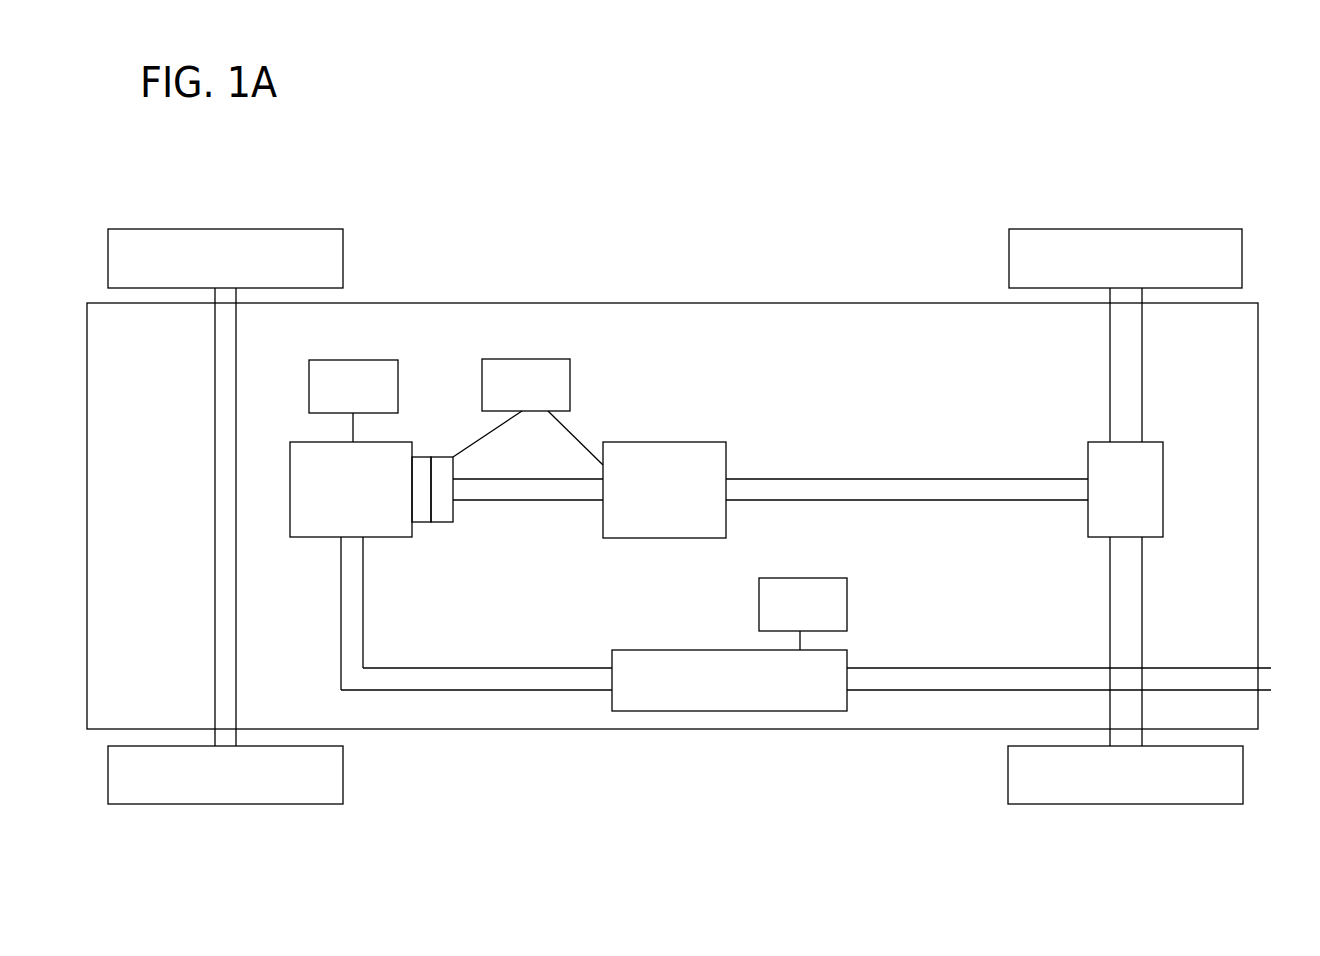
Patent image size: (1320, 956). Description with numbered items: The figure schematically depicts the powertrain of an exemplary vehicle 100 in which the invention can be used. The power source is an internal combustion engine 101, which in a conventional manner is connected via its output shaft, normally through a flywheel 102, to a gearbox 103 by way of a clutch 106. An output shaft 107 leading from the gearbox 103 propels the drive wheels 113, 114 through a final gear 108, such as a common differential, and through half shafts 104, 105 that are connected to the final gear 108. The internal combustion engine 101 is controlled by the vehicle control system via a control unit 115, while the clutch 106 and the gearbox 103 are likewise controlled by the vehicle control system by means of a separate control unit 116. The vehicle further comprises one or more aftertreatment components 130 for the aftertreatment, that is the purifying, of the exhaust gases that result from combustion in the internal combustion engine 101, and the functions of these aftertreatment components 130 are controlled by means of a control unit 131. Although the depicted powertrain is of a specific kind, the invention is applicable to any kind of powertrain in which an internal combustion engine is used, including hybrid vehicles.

The vehicle 100 is at (577, 135).
The internal combustion engine 101 is at (322, 528).
The flywheel 102 is at (428, 523).
The gearbox 103 is at (665, 453).
The half shaft 104 is at (1128, 363).
The half shaft 105 is at (1135, 651).
The clutch 106 is at (443, 515).
The output shaft 107 is at (1003, 494).
The final gear 108 is at (1157, 485).
The drive wheel 113 is at (1238, 249).
The drive wheel 114 is at (1237, 778).
The control unit 115 is at (353, 395).
The control unit 116 is at (547, 397).
The aftertreatment component 130 is at (715, 663).
The control unit 131 is at (803, 613).